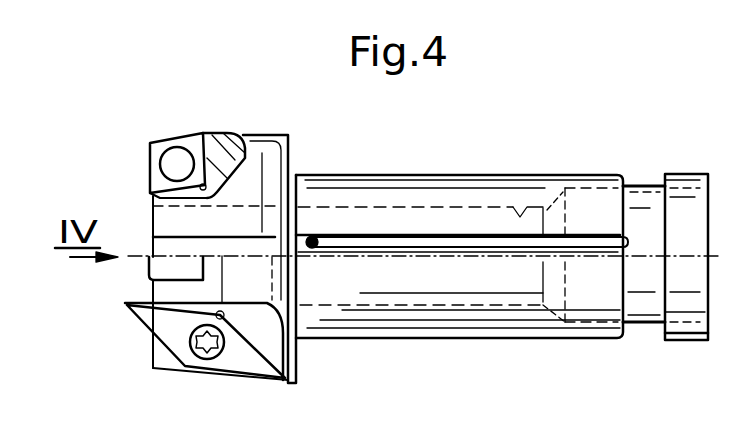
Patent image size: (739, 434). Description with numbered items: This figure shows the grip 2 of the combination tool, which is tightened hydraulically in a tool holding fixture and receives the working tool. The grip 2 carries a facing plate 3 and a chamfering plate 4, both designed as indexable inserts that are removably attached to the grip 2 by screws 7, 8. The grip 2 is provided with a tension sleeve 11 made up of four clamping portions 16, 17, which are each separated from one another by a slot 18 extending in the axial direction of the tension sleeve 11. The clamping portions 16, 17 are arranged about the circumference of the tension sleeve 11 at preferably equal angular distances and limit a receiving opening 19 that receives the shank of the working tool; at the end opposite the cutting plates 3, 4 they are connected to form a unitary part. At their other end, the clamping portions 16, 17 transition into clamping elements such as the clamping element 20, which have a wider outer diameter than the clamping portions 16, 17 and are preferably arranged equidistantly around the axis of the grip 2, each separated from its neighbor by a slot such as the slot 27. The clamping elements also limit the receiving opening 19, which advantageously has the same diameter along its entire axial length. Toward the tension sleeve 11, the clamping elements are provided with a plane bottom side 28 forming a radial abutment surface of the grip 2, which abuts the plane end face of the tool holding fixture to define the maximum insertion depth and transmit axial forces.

The grip 2 is at (675, 152).
The facing plate 3 is at (190, 146).
The chamfering plate 4 is at (172, 327).
The screw 7 is at (173, 165).
The screw 8 is at (217, 342).
The tension sleeve 11 is at (490, 188).
The clamping portion 16 is at (443, 188).
The clamping portion 17 is at (357, 327).
The slot 18 is at (428, 243).
The receiving opening 19 is at (525, 203).
The clamping element 20 is at (237, 147).
The slot 27 is at (163, 248).
The plane bottom side 28 is at (300, 124).